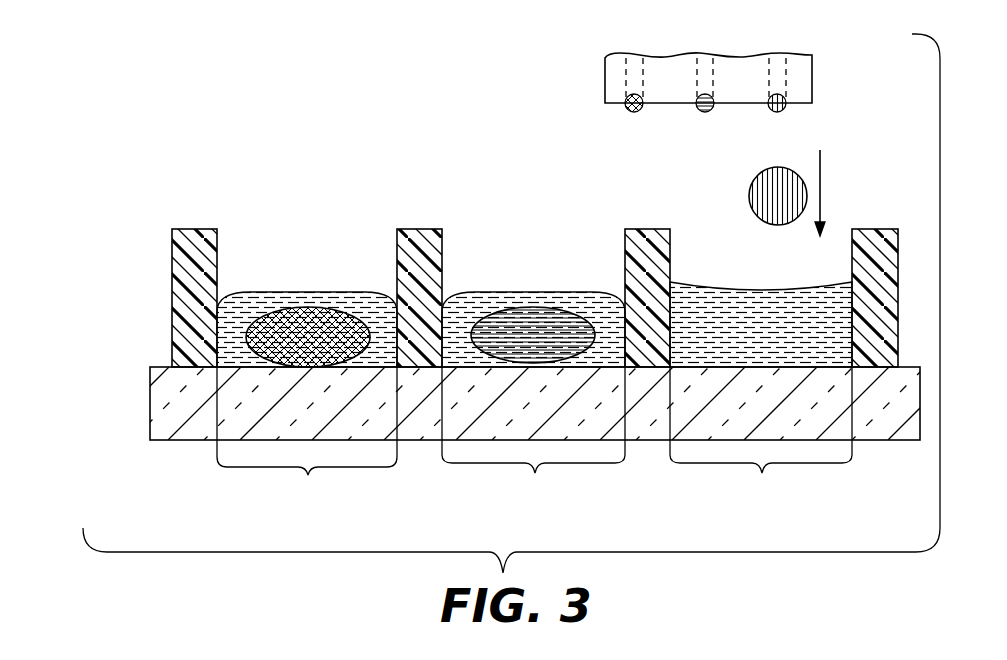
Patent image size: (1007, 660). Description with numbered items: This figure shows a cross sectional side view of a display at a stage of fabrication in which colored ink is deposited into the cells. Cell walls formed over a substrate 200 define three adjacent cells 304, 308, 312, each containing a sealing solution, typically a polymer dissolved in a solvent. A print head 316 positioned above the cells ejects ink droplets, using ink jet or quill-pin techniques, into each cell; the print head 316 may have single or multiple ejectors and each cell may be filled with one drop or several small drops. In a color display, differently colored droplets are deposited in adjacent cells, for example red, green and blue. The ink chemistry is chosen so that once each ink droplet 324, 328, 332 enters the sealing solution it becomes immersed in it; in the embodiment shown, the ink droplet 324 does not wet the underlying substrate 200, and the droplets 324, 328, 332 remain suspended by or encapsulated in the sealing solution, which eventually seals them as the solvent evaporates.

The substrate 200 is at (157, 397).
The cell 304 is at (307, 379).
The cell 308 is at (533, 379).
The cell 312 is at (781, 509).
The print head 316 is at (658, 113).
The ink droplet 324 is at (313, 320).
The ink droplet 328 is at (542, 320).
The ink droplet 332 is at (772, 185).